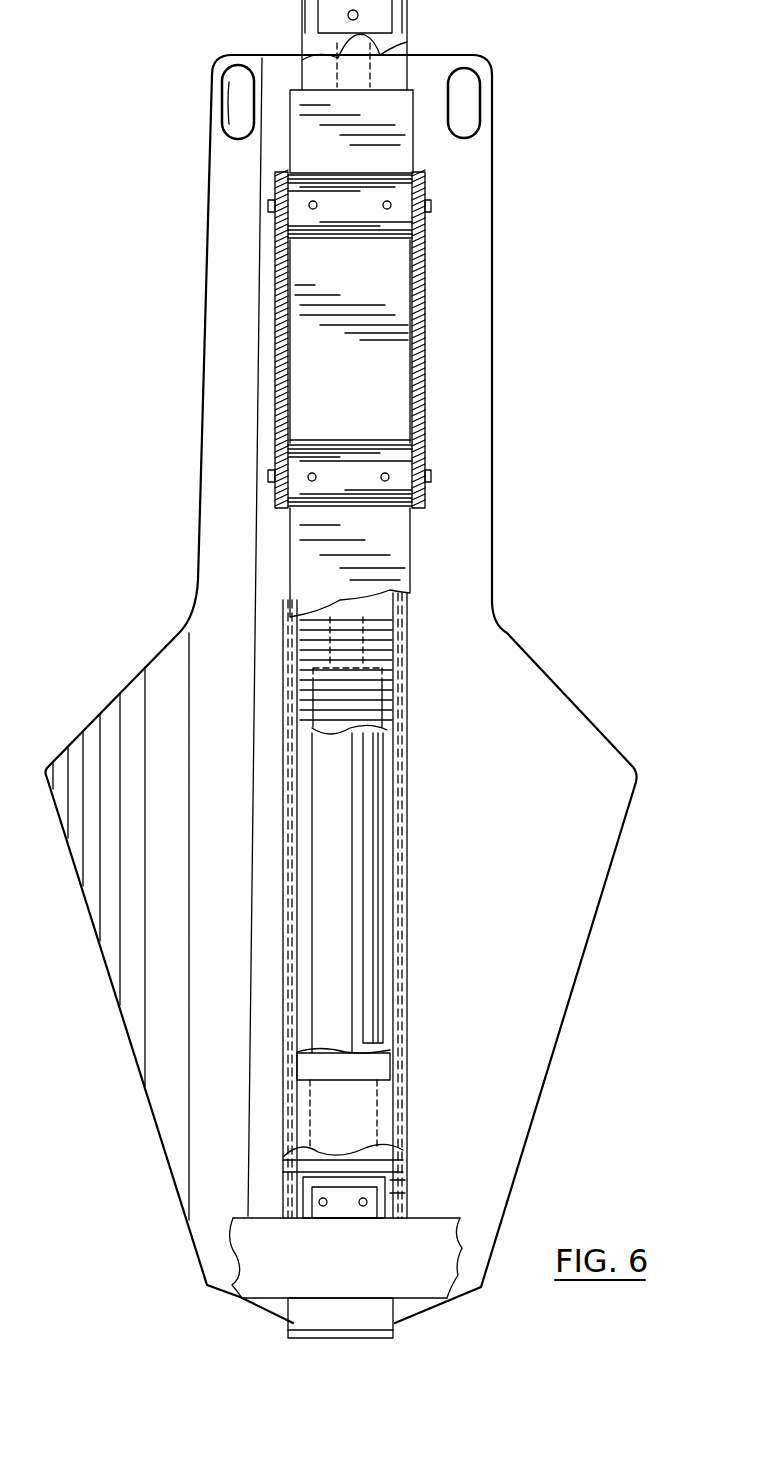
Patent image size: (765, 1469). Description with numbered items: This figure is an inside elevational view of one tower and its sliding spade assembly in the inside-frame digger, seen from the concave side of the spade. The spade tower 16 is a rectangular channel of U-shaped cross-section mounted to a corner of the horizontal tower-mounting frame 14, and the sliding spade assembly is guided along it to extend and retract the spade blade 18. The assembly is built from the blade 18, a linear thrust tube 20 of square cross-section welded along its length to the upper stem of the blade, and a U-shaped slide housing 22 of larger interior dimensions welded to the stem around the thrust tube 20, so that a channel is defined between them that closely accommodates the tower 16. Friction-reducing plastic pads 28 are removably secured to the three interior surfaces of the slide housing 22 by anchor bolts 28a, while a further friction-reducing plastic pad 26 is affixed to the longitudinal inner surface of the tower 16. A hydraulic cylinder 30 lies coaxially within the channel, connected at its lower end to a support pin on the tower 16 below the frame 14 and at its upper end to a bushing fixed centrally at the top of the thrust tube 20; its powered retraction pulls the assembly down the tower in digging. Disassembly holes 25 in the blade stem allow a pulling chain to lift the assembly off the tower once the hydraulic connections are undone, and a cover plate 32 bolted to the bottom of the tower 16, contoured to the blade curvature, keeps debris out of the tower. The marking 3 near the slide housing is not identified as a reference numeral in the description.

The square frame 14 is at (268, 1214).
The spade tower 16 is at (395, 143).
The spade blade 18 is at (493, 425).
The linear thrust tube 20 is at (407, 20).
The U-shaped slide housing 22 is at (418, 330).
The disassembly holes 25 is at (482, 105).
The friction-reducing plastic pad 26 is at (387, 693).
The friction-reducing plastic pads 28 is at (400, 190).
The anchor bolts 28a is at (431, 480).
The hydraulic cylinder 30 is at (360, 838).
The cover plate 32 is at (323, 1332).
The tube section 3 is at (405, 390).